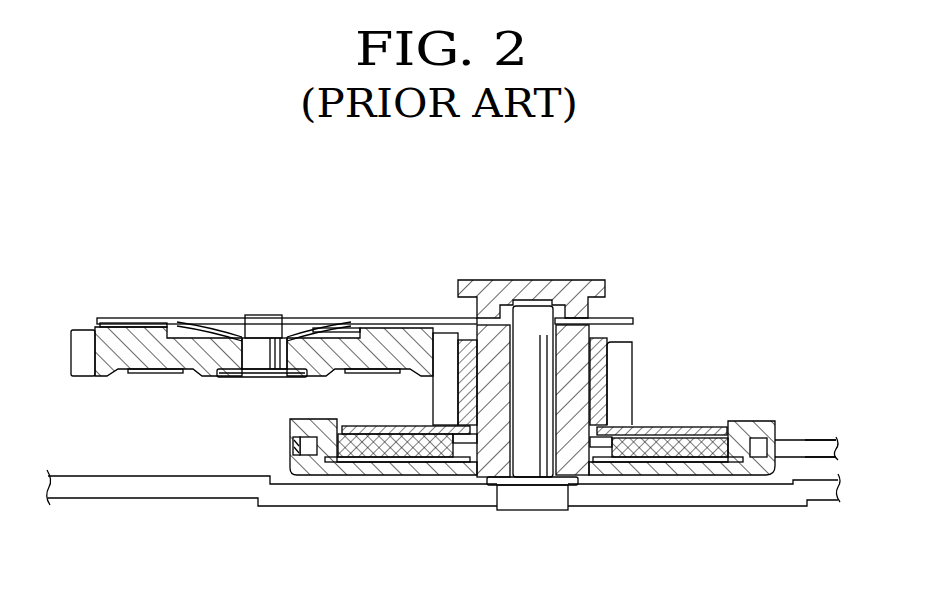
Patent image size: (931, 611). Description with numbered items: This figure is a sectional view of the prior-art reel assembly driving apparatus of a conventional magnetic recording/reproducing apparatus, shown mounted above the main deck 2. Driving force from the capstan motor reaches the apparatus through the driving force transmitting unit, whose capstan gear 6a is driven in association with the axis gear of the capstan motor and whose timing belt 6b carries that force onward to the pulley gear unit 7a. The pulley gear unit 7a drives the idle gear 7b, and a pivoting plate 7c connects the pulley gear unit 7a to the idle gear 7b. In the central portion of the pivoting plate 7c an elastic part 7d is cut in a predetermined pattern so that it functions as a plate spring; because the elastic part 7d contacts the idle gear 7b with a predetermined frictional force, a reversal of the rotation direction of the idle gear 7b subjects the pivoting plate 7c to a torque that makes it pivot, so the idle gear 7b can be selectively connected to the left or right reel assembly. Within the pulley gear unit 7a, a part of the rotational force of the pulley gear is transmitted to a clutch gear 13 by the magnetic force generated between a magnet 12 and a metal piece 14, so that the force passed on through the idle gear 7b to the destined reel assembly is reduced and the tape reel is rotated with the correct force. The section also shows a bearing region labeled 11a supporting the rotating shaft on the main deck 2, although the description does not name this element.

The main deck 2 is at (778, 498).
The capstan gear 6a is at (826, 445).
The timing belt 6b is at (837, 437).
The pulley gear unit 7a is at (752, 403).
The idle gear 7b is at (131, 343).
The pivoting plate 7c is at (393, 328).
The elastic part 7d is at (313, 335).
The bearing housing 11a is at (493, 445).
The magnet 12 is at (647, 450).
The clutch gear 13 is at (600, 360).
The metal piece 14 is at (697, 430).